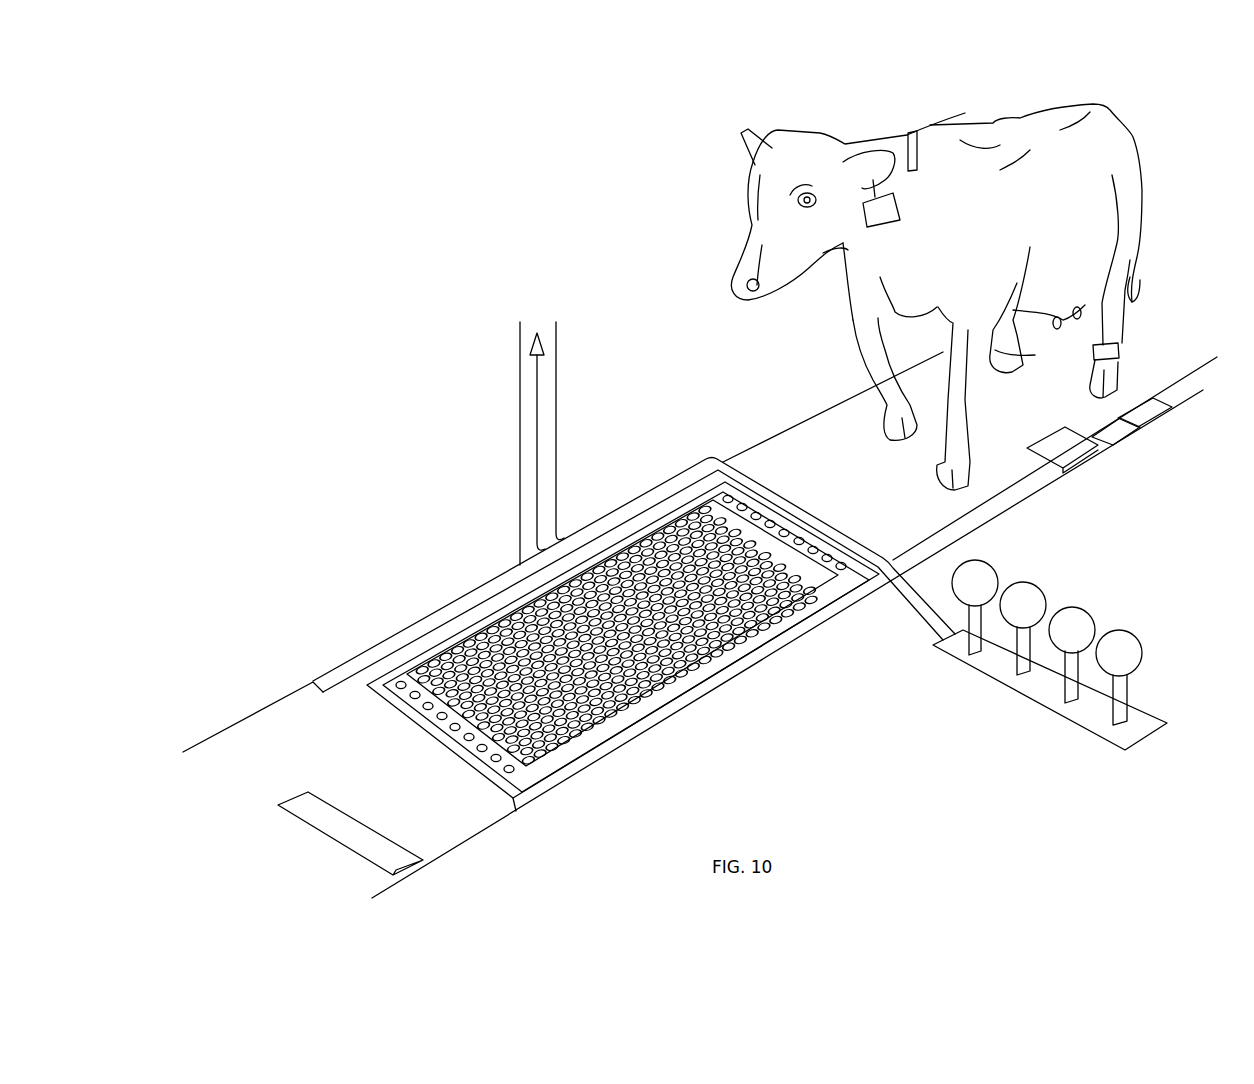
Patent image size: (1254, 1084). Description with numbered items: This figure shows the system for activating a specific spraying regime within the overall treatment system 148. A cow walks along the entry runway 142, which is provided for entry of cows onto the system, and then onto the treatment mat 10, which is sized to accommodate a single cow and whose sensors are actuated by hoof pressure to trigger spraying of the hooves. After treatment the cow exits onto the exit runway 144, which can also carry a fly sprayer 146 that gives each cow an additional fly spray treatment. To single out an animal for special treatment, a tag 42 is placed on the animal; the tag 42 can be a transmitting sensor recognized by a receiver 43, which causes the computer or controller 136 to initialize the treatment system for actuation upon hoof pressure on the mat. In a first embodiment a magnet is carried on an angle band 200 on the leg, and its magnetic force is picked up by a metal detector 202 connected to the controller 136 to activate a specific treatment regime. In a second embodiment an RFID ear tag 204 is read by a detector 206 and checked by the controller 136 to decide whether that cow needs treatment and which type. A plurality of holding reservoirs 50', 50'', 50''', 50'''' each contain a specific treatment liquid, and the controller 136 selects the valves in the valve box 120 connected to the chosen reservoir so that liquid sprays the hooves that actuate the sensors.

The treatment mat 10 is at (507, 607).
The tag 42 is at (917, 150).
The receiver 43 is at (1068, 447).
The holding reservoir 50' is at (1010, 576).
The holding reservoir 50'' is at (1061, 598).
The holding reservoir 50''' is at (1114, 624).
The holding reservoir 50'''' is at (1166, 654).
The valve box 120 is at (1045, 692).
The controller 136 is at (553, 275).
The entry runway 142 is at (840, 478).
The exit runway 144 is at (383, 750).
The fly sprayer 146 is at (310, 812).
The treatment system 148 is at (347, 362).
The angle band 200 is at (1105, 352).
The metal detector 202 is at (1177, 381).
The ear tag 204 is at (870, 205).
The detector 206 is at (1117, 430).